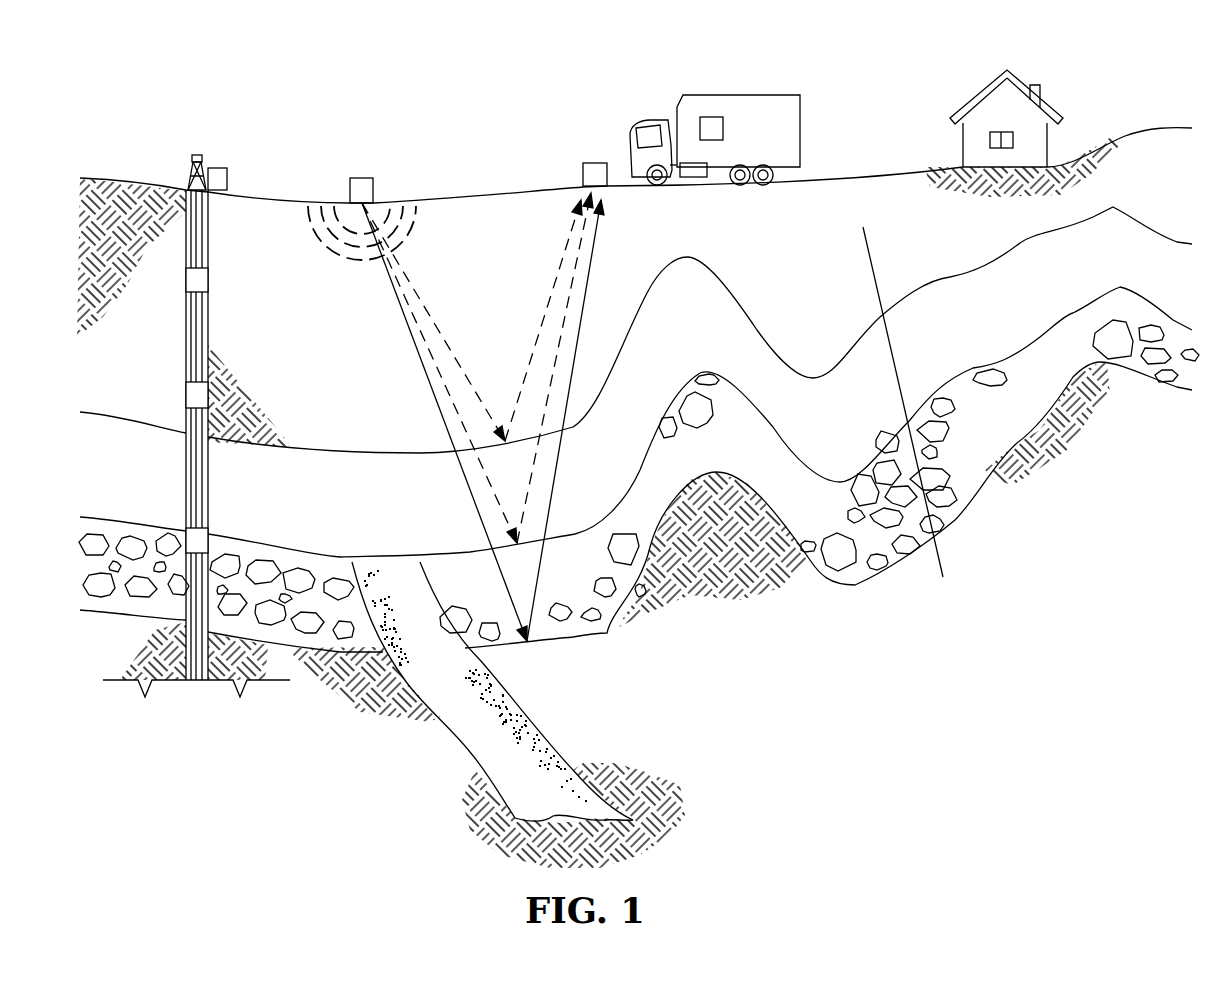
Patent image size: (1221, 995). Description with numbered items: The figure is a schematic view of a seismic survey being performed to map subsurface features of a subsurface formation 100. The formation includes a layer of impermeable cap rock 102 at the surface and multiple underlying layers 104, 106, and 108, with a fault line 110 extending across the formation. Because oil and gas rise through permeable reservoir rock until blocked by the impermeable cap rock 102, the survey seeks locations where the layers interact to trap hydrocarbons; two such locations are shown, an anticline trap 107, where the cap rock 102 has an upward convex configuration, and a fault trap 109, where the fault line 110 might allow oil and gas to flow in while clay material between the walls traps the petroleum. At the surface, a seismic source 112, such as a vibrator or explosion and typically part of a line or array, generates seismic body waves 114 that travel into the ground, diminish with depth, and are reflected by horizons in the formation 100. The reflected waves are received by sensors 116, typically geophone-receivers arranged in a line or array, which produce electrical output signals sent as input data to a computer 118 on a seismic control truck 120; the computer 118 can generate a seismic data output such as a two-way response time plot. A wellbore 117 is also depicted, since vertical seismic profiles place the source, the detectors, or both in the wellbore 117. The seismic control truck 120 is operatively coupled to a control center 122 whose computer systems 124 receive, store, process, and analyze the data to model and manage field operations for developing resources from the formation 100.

The subsurface formation 100 is at (415, 70).
The layer of impermeable cap rock 102 is at (166, 347).
The underlying layer 104 is at (426, 514).
The underlying layer 106 is at (164, 582).
The anticline trap 107 is at (706, 275).
The underlying layer 108 is at (468, 687).
The fault trap 109 is at (879, 350).
The fault line 110 is at (872, 240).
The seismic source 112 is at (212, 167).
The seismic body waves 114 is at (357, 262).
The sensors 116 is at (592, 163).
The wellbore 117 is at (208, 238).
The computer 118 is at (712, 117).
The seismic control truck 120 is at (788, 96).
The control center 122 is at (1052, 113).
The computer systems 124 is at (996, 131).